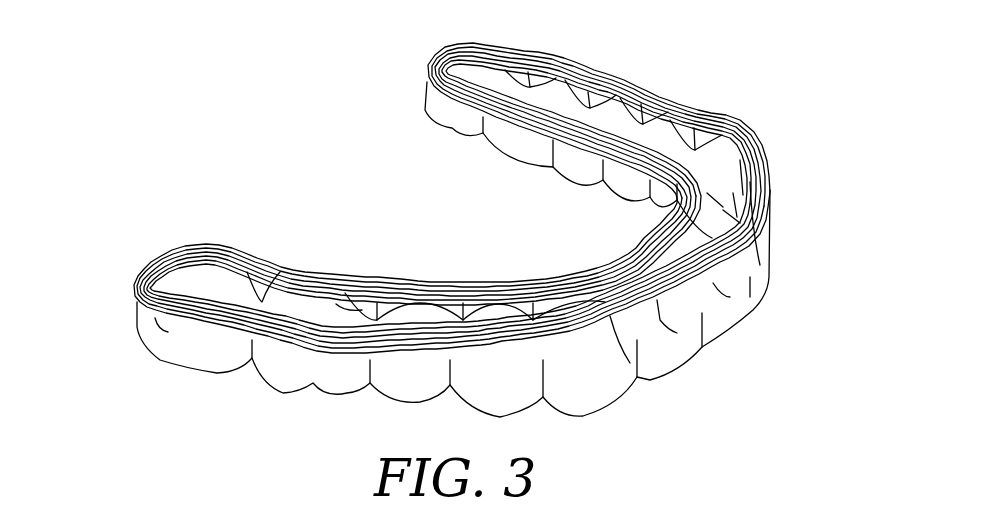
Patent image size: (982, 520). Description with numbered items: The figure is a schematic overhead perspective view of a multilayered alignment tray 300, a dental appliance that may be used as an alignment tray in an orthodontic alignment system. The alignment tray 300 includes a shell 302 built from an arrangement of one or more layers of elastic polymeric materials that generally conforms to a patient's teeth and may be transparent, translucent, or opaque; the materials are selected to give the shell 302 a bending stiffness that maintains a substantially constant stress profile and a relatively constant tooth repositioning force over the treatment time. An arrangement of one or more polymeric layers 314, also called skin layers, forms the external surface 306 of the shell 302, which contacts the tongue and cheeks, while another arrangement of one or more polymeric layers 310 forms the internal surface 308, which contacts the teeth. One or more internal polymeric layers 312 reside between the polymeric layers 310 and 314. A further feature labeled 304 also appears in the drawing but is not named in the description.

The multilayered alignment tray 300 is at (453, 220).
The shell 302 is at (446, 46).
The lower tray portion 304 is at (196, 282).
The external surface 306 is at (203, 343).
The internal surface 308 is at (349, 310).
The polymeric layers 310 is at (613, 78).
The internal polymeric layers 312 is at (747, 127).
The polymeric layers 314 is at (770, 193).